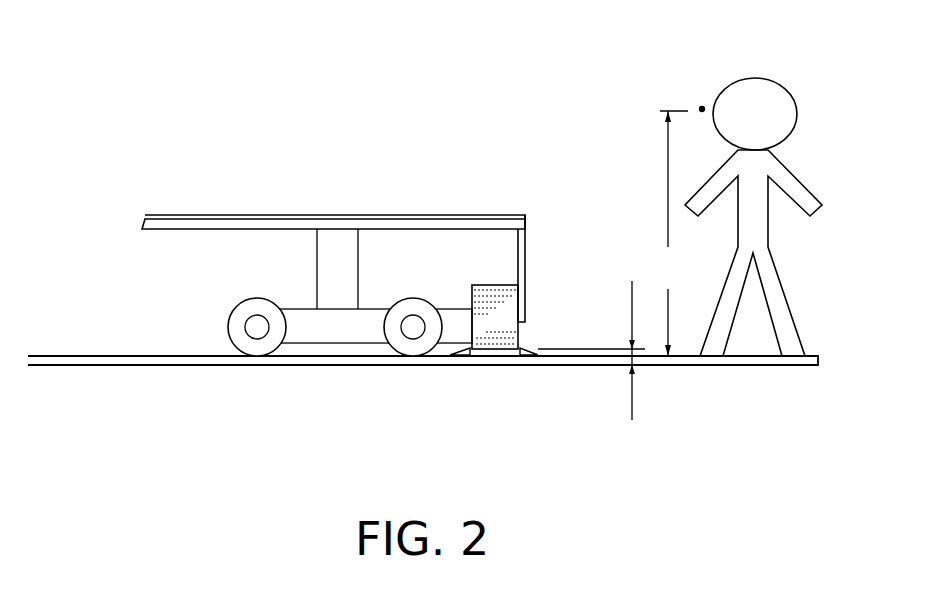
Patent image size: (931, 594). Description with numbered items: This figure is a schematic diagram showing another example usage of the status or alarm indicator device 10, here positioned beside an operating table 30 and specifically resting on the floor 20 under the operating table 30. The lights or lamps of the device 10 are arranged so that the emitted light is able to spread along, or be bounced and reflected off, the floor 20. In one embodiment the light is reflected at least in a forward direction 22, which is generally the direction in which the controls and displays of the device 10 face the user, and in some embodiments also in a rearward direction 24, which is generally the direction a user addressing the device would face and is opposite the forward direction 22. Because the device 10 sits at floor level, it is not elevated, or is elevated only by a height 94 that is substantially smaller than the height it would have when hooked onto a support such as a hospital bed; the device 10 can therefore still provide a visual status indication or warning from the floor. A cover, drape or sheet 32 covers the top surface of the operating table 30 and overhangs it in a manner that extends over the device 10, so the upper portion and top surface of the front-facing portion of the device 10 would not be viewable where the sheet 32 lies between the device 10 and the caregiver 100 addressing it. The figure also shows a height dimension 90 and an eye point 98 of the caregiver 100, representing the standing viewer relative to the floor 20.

The status or alarm indicator device 10 is at (508, 326).
The floor 20 is at (131, 351).
The forward direction 22 is at (522, 354).
The rearward direction 24 is at (465, 354).
The operating table 30 is at (142, 228).
The cover, drape or sheet 32 is at (525, 240).
The eye height dimension 90 is at (672, 233).
The height 94 is at (591, 339).
The eye of user 98 is at (686, 92).
The user 100 is at (753, 217).